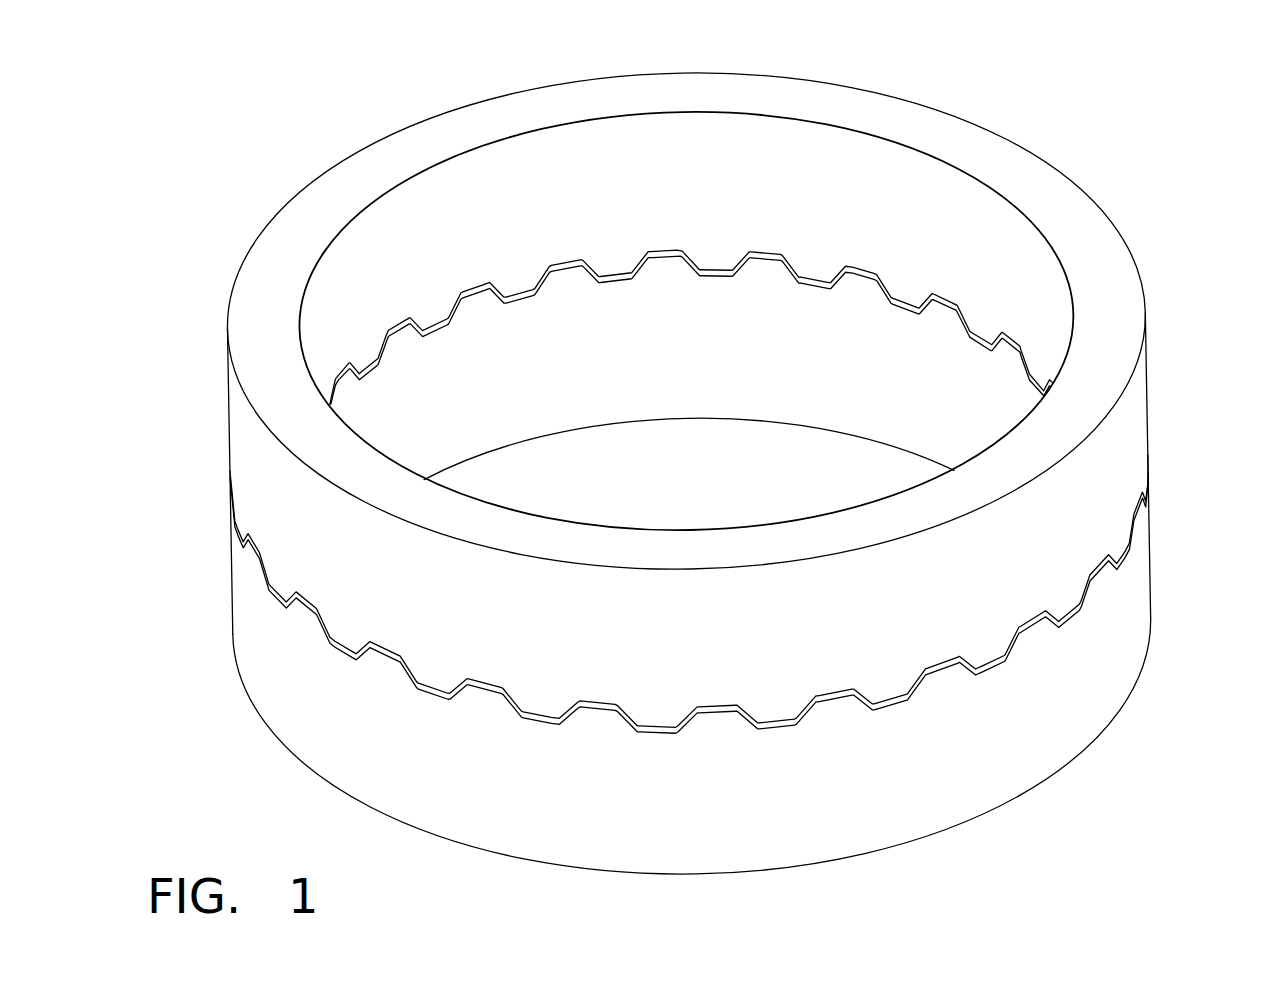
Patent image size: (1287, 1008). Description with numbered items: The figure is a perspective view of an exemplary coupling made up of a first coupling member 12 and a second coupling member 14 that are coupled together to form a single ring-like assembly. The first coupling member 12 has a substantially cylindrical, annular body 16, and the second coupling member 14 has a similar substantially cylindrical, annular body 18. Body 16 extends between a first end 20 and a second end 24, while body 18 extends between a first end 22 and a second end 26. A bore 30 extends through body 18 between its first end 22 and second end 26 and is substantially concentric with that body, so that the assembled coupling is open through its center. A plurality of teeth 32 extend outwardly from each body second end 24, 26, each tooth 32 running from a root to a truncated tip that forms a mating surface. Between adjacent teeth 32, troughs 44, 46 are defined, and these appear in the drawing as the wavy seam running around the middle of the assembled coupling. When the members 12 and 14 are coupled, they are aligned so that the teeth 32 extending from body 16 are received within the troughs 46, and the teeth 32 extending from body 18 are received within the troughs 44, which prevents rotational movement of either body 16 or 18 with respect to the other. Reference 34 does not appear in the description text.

The first coupling member 12 is at (1117, 446).
The second coupling member 14 is at (1098, 648).
The body 16 is at (668, 640).
The body 18 is at (857, 807).
The first end 20 is at (1083, 232).
The first end 22 is at (1095, 748).
The second end 24 is at (1125, 550).
The second end 26 is at (1105, 597).
The bore 30 is at (837, 73).
The teeth 32 is at (348, 625).
The recesses 34 is at (378, 667).
The troughs 44 is at (542, 717).
The troughs 46 is at (598, 705).